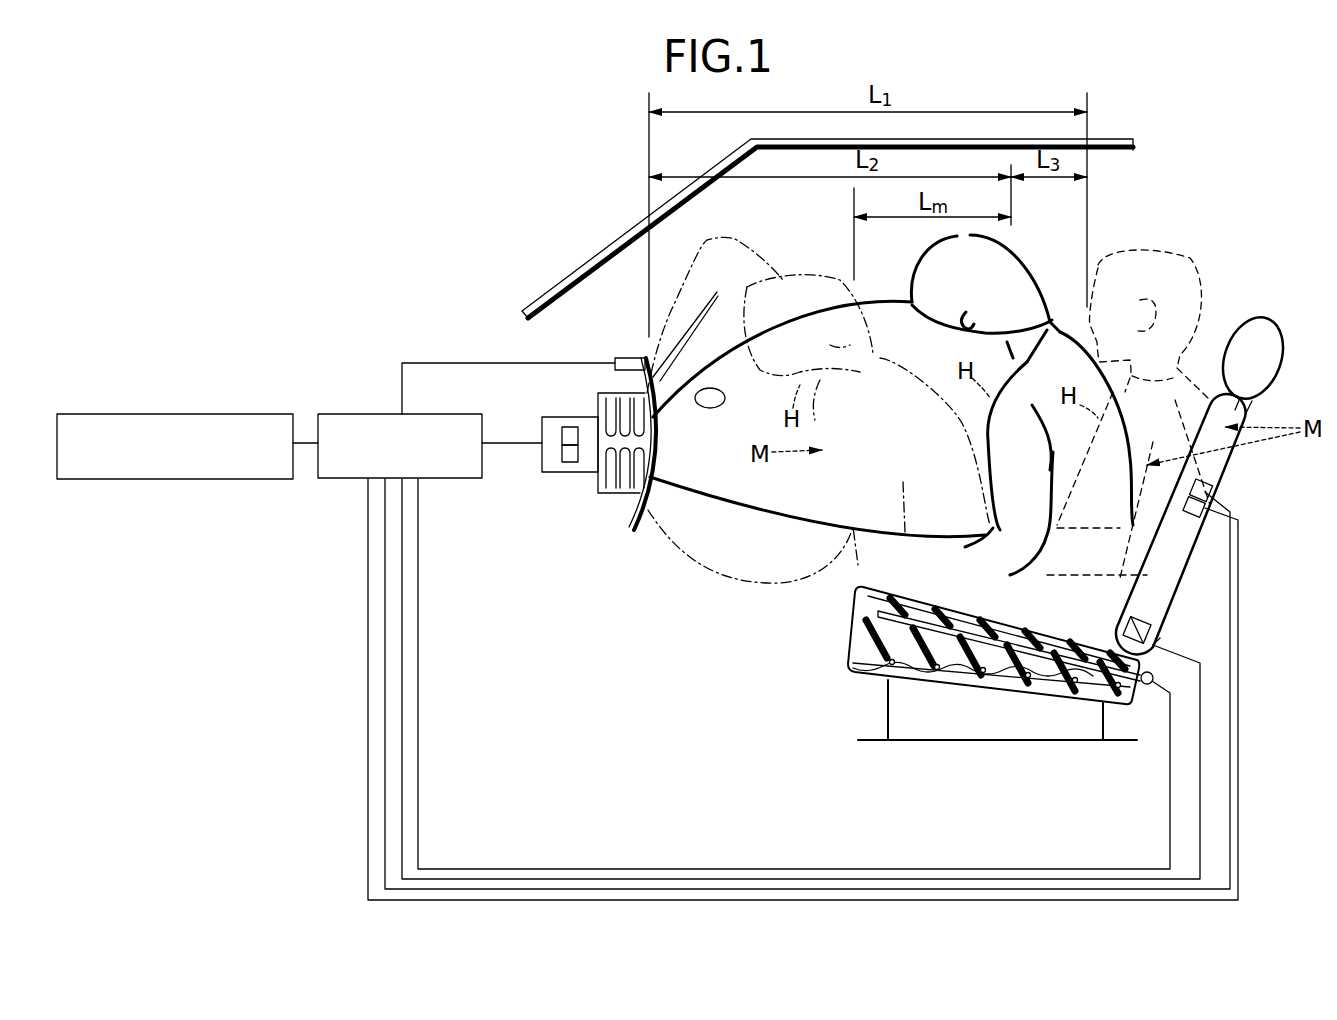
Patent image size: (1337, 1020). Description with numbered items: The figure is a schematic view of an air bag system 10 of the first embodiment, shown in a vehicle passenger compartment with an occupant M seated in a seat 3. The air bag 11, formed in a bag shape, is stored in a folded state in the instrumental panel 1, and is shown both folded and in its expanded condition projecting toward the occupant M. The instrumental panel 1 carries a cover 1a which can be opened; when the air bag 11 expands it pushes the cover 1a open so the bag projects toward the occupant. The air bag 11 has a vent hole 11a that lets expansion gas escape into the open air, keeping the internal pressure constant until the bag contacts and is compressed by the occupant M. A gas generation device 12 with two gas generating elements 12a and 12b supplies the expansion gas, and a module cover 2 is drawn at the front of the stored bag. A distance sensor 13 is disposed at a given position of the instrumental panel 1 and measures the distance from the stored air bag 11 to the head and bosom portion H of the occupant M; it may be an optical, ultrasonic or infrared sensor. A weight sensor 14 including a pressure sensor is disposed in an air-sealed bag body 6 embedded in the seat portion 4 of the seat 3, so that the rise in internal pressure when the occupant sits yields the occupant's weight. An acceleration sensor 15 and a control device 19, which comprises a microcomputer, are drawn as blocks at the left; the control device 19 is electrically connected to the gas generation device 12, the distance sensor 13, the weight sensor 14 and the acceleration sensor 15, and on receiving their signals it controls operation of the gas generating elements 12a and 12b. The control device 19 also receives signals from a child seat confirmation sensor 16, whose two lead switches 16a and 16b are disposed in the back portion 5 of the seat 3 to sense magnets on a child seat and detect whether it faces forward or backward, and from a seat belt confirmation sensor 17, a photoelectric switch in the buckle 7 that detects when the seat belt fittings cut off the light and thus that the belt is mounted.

The instrumental panel 1 is at (667, 454).
The cover 1a is at (695, 338).
The module cover 2 is at (648, 519).
The seat 3 is at (1073, 543).
The seat portion 4 is at (858, 632).
The back portion 5 is at (1172, 599).
The bag body 6 is at (965, 612).
The buckle 7 is at (1123, 625).
The air bag system 10 is at (458, 334).
The air bag 11 is at (798, 401).
The vent hole 11a is at (705, 408).
The gas generation device 12 is at (533, 499).
The gas generating element 12a is at (566, 432).
The gas generating element 12b is at (572, 462).
The distance sensor 13 is at (615, 360).
The weight sensor 14 is at (1149, 686).
The acceleration sensor 15 is at (226, 414).
The child seat confirmation sensor 16 is at (1260, 513).
The lead switch 16a is at (1212, 490).
The lead switch 16b is at (1212, 512).
The seat belt confirmation sensor 17 is at (1155, 637).
The control device 19 is at (364, 414).